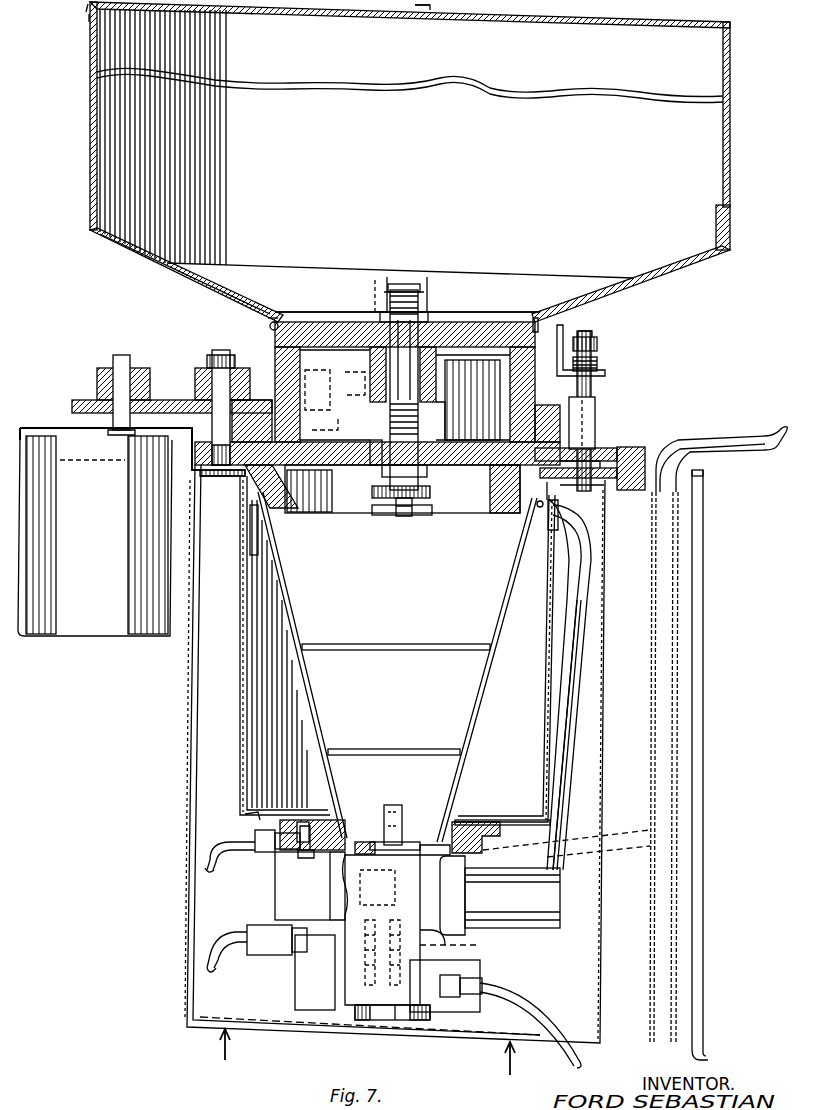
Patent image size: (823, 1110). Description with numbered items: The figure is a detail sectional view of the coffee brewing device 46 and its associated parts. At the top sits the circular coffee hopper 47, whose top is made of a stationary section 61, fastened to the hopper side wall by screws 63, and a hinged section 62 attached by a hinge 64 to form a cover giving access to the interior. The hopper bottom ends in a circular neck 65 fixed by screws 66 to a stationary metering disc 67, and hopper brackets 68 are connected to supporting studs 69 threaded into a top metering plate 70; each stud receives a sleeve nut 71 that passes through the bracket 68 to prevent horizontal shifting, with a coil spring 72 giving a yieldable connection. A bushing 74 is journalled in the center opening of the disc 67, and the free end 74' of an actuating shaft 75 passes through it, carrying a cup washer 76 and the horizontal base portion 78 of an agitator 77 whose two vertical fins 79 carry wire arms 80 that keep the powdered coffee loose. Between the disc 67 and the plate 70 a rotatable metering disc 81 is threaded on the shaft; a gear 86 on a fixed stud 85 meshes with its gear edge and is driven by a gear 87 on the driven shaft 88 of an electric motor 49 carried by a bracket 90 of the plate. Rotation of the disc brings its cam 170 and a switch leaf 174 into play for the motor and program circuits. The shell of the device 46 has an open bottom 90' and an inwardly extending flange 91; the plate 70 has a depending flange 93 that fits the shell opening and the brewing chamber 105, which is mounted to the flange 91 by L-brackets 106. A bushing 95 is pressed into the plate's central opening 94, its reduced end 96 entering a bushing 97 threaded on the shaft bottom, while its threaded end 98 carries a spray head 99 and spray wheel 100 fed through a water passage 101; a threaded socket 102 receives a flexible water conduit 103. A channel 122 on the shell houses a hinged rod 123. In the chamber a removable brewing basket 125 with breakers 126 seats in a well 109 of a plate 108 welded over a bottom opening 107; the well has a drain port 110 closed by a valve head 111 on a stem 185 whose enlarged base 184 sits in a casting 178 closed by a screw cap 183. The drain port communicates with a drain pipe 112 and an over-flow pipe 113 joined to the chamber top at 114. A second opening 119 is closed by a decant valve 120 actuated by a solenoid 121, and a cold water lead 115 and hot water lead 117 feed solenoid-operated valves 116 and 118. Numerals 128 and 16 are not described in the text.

The coffee hopper 47 is at (732, 178).
The hinged top section 62 is at (718, 24).
The stationary top section 61 is at (86, 5).
The screws 63 is at (90, 18).
The hinge 64 is at (418, 8).
The wire arms 80 is at (165, 260).
The agitator 77 is at (549, 290).
The stationary metering disc 67 is at (318, 322).
The cam 170 is at (335, 383).
The movable switch leaf 174 is at (317, 426).
The reduced end of bushing 96 is at (440, 436).
The bushing 97 is at (442, 412).
The bushing 74 is at (448, 390).
The free end of actuating shaft 74' is at (428, 270).
The actuating shaft 75 is at (428, 292).
The cup washer 76 is at (430, 312).
The horizontal base portion 78 is at (385, 270).
The vertical fins 79 is at (392, 290).
The gear 87 is at (82, 402).
The driven shaft 88 is at (125, 360).
The fixed stud 85 is at (207, 356).
The gear 86 is at (250, 400).
The bracket 90 is at (106, 433).
The electric motor 49 is at (92, 556).
The circular neck 65 is at (270, 328).
The screws 66 is at (266, 320).
The brackets 68 is at (570, 350).
The sleeve nut 71 is at (598, 343).
The coil spring 72 is at (598, 366).
The supporting studs 69 is at (594, 385).
The top metering plate 70 is at (598, 440).
The rotatable metering disc 81 is at (558, 415).
The water passage 101 is at (505, 470).
The depending flange 93 is at (290, 500).
The bushing 95 is at (370, 462).
The central opening 94 is at (382, 478).
The spray head 99 is at (430, 492).
The threaded end of bushing 98 is at (385, 515).
The spray wheel 100 is at (412, 516).
The threaded socket 102 is at (645, 447).
The hinged rod 123 is at (715, 447).
The flexible water conduit 103 is at (705, 548).
The channel 122 is at (672, 670).
The coffee brewing device 46 is at (190, 770).
The inwardly extending flange 91 is at (242, 478).
The brewing chamber 105 is at (244, 680).
The L-brackets 106 is at (246, 540).
The brewing basket 125 is at (304, 686).
The breakers 126 is at (420, 641).
The overflow connection 114 is at (560, 550).
The over-flow pipe 113 is at (575, 780).
The well 109 is at (296, 818).
The decant valve 120 is at (292, 790).
The second opening 119 is at (238, 815).
The drain port 110 is at (362, 840).
The valve head 111 is at (405, 830).
The opening 107 is at (450, 825).
The plate 108 is at (488, 820).
The inlet elbow 128 is at (205, 842).
The solenoid 121 is at (275, 903).
The casting 178 is at (352, 1005).
The hot water lead 117 is at (238, 965).
The solenoid-operated valve 118 is at (298, 985).
The screw cap 183 is at (385, 1020).
The enlarged base 184 is at (410, 1022).
The solenoid-operated valve 116 is at (470, 1012).
The stem 185 is at (482, 945).
The drain pipe 112 is at (552, 930).
The cold water lead 115 is at (552, 1035).
The open bottom 90' is at (370, 1044).
The section line 16 is at (367, 1057).